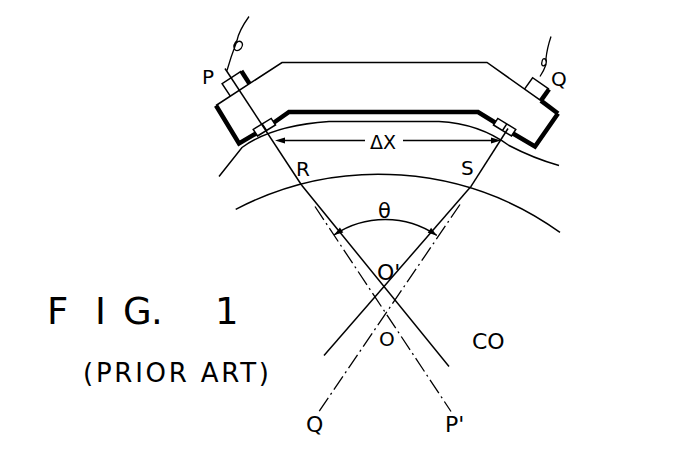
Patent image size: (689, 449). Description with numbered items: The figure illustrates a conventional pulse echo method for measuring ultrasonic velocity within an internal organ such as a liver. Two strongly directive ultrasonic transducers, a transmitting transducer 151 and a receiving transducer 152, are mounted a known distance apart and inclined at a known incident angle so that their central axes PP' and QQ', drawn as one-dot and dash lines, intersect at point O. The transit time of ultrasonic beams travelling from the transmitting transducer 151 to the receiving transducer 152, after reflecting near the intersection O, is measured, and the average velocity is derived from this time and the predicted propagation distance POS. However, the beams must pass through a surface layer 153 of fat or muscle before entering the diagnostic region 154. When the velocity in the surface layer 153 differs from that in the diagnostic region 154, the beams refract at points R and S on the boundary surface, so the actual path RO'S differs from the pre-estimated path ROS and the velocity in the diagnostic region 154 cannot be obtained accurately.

The transmitting transducer 151 is at (246, 71).
The receiving transducer 152 is at (531, 82).
The surface layer 153 is at (578, 166).
The diagnostic region 154 is at (437, 300).